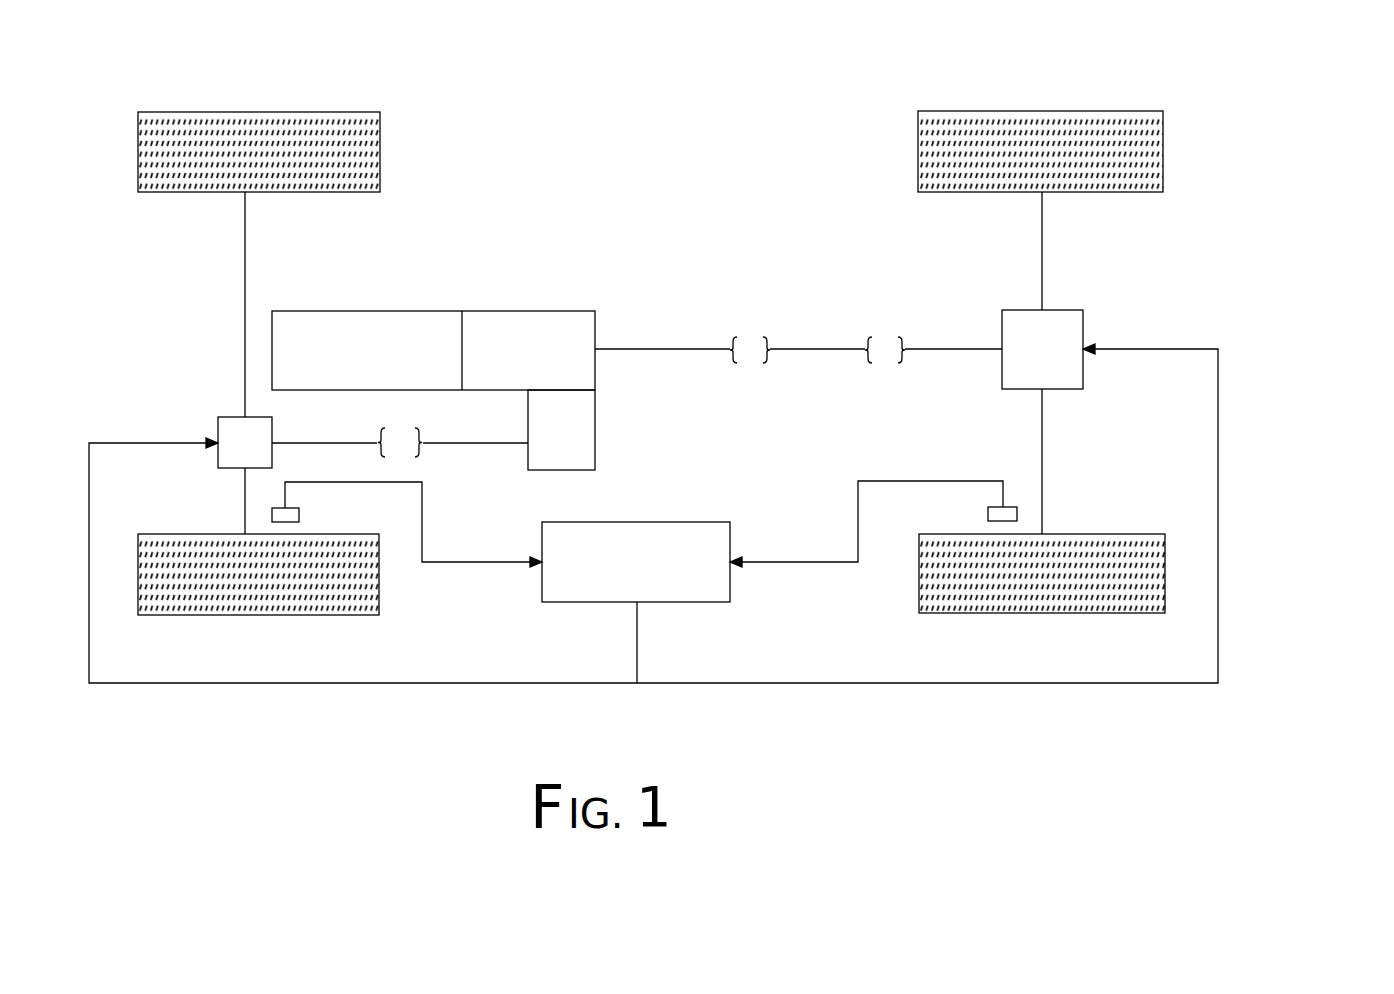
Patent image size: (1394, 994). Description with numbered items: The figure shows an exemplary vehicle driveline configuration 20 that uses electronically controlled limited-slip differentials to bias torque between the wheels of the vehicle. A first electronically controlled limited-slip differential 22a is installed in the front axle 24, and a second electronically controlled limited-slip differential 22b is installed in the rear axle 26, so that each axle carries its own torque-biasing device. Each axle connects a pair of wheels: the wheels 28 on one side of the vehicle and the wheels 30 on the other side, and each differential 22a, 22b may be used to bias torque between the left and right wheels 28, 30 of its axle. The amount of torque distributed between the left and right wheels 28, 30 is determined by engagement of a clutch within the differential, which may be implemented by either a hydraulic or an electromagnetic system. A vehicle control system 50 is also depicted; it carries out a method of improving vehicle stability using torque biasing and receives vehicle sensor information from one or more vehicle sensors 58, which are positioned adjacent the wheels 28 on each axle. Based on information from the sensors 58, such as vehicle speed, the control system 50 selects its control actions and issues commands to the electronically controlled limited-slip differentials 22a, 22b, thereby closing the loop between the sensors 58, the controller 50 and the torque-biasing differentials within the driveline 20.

The driveline configuration 20 is at (1259, 152).
The electronically controlled limited-slip differential 22a is at (234, 433).
The electronically controlled limited-slip differential 22b is at (1055, 336).
The front axle 24 is at (247, 268).
The rear axle 26 is at (1043, 464).
The left wheels 28 is at (266, 598).
The right wheels 30 is at (277, 128).
The vehicle control system 50 is at (646, 554).
The vehicle sensors 58 is at (300, 513).